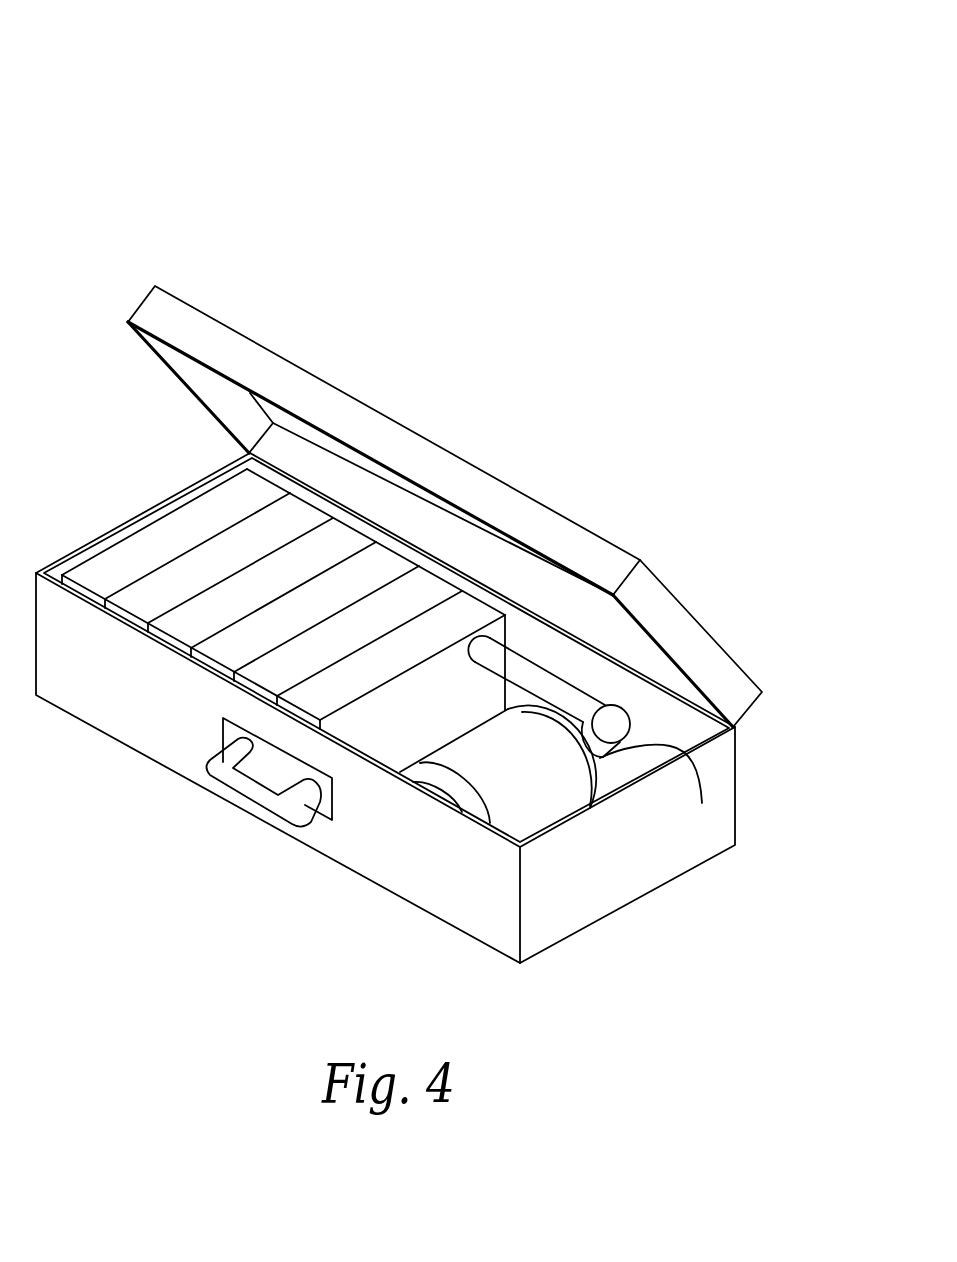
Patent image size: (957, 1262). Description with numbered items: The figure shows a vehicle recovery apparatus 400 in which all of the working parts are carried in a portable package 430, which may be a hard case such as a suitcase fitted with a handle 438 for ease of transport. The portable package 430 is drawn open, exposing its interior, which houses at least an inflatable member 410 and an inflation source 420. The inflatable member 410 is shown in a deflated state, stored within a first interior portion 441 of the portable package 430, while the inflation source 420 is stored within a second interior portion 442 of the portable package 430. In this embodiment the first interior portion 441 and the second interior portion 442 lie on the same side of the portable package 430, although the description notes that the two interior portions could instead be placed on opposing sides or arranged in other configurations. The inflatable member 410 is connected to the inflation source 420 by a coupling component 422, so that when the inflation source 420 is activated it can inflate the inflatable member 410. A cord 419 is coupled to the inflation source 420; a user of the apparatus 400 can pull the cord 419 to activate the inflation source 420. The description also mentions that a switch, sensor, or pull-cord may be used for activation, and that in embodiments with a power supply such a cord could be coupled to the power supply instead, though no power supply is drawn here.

The vehicle recovery apparatus 400 is at (133, 98).
The inflatable member 410 is at (124, 549).
The cord 419 is at (663, 790).
The inflation source 420 is at (505, 797).
The coupling component 422 is at (622, 726).
The portable package 430 is at (545, 415).
The handle 438 is at (242, 792).
The first interior portion 441 is at (191, 689).
The second interior portion 442 is at (418, 815).